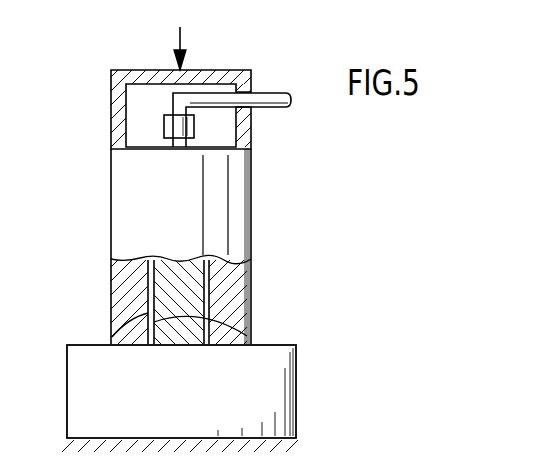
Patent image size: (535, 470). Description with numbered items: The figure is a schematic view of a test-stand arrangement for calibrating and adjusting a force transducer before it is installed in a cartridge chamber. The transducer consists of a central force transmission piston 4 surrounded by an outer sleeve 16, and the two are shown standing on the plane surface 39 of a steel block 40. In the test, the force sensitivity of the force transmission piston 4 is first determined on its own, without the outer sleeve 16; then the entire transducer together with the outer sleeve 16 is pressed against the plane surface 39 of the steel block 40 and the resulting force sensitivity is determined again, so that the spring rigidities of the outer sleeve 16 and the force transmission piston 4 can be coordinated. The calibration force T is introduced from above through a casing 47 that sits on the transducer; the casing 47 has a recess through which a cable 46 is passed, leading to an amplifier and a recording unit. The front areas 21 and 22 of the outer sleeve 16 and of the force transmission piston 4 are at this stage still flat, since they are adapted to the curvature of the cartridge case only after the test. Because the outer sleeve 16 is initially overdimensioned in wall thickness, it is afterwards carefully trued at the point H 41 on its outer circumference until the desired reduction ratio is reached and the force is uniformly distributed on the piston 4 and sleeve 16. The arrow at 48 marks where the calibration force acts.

The force transmission piston 4 is at (188, 288).
The outer sleeve 16 is at (233, 302).
The front area of the outer sleeve 21 is at (177, 320).
The front area of the power transmission piston 22 is at (137, 325).
The plane surface 39 is at (195, 346).
The steel block 40 is at (268, 387).
The point H 41 is at (108, 271).
The cable 46 is at (277, 95).
The casing 47 is at (247, 128).
The force application point 48 is at (177, 46).